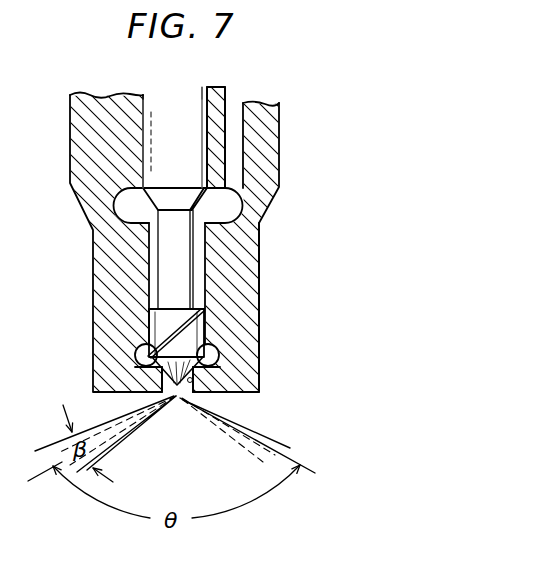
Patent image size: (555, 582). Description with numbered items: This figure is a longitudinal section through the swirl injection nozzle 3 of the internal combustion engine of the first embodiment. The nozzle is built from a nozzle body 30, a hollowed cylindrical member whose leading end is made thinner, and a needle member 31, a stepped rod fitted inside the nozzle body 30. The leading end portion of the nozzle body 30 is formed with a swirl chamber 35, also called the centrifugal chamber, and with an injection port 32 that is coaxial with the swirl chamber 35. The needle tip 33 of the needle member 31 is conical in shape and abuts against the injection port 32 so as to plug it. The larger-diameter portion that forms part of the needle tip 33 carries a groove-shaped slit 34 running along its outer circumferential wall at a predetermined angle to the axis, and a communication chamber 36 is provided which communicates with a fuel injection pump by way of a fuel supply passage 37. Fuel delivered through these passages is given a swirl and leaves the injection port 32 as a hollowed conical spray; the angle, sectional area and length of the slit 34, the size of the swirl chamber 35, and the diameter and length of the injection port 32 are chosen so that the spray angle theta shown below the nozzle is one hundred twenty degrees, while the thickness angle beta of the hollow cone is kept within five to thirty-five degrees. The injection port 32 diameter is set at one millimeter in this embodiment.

The swirl injection nozzle 3 is at (277, 291).
The nozzle body 30 is at (237, 265).
The needle member 31 is at (168, 148).
The injection port 32 is at (217, 394).
The needle tip 33 is at (180, 360).
The groove-shaped slit 34 is at (165, 328).
The swirl chamber 35 is at (150, 350).
The communication chamber 36 is at (230, 207).
The fuel supply passage 37 is at (230, 133).